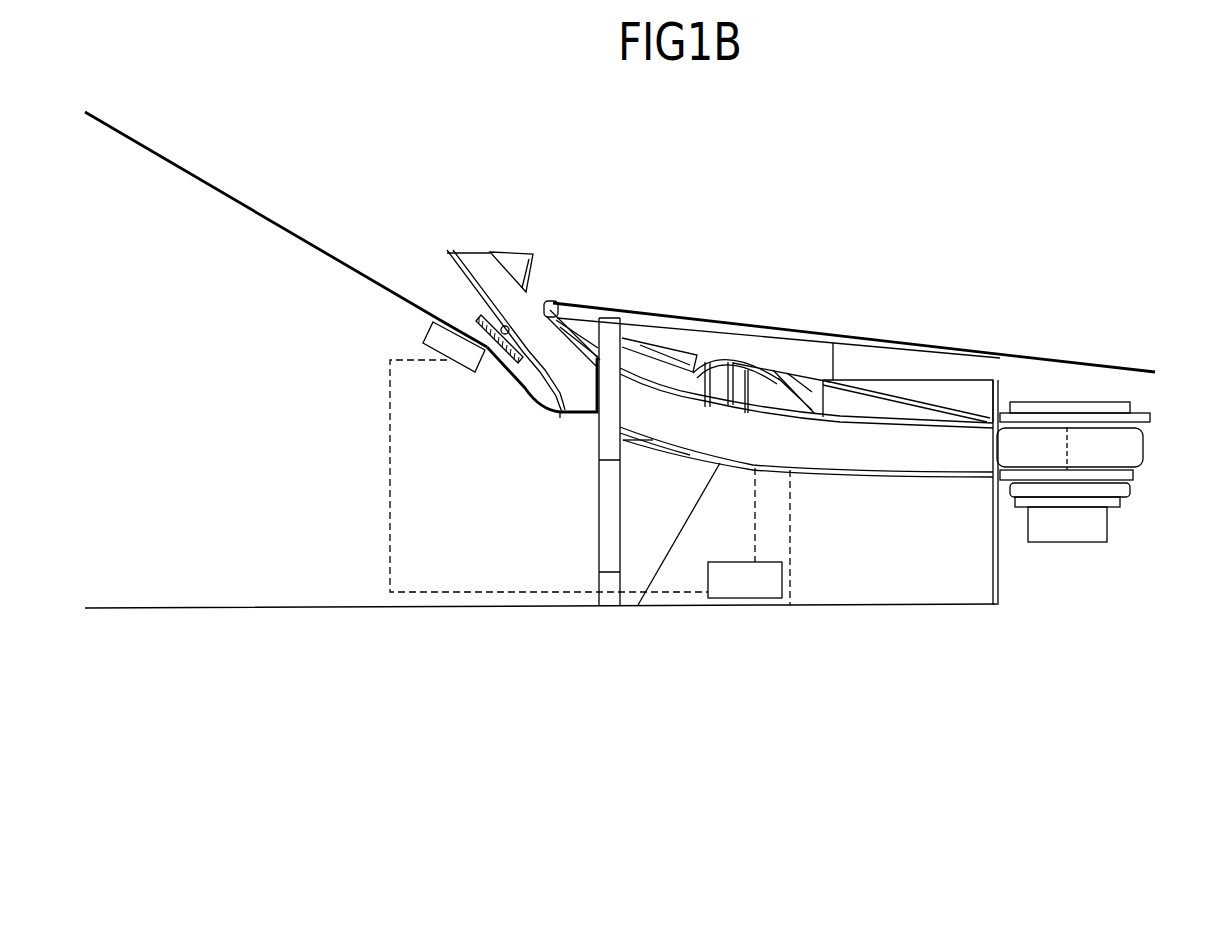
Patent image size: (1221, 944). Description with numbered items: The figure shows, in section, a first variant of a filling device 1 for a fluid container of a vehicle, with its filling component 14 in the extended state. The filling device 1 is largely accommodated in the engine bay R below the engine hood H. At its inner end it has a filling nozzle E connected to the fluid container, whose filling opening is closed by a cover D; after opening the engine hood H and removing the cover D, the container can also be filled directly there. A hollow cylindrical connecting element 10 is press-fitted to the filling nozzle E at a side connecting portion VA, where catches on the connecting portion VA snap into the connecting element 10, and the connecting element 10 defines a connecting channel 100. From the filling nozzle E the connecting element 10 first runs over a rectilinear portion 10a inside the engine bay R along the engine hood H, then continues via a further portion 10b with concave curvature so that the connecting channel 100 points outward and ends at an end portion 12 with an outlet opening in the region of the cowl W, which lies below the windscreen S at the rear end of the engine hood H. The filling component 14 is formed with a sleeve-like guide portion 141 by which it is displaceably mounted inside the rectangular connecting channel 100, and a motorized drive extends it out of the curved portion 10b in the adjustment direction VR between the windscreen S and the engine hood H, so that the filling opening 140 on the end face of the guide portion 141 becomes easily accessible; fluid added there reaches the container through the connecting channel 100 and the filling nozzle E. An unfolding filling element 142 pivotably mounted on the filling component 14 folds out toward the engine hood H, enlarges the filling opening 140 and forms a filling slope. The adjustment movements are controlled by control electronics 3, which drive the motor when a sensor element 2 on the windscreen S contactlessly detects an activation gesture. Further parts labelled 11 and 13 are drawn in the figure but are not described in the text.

The filling device 1 is at (840, 544).
The sensor element 2 is at (460, 347).
The control electronics 3 is at (750, 585).
The connecting element 10 is at (947, 489).
The rectilinear portion 10a is at (880, 473).
The curved portion 10b is at (680, 450).
The truss structure 11 is at (722, 373).
The end portion 12 is at (520, 350).
The bearing bar 13 is at (497, 370).
The filling component 14 is at (462, 237).
The filling opening 140 is at (467, 290).
The sleeve-like guide portion 141 is at (463, 290).
The filling element 142 is at (507, 253).
The connecting channel 100 is at (825, 383).
The windscreen S is at (190, 170).
The adjustment direction VR is at (460, 213).
The cowl W is at (560, 418).
The engine hood H is at (773, 327).
The engine bay R is at (947, 367).
The connecting portion VA is at (997, 430).
The cover D is at (1080, 403).
The filling nozzle E is at (1133, 443).